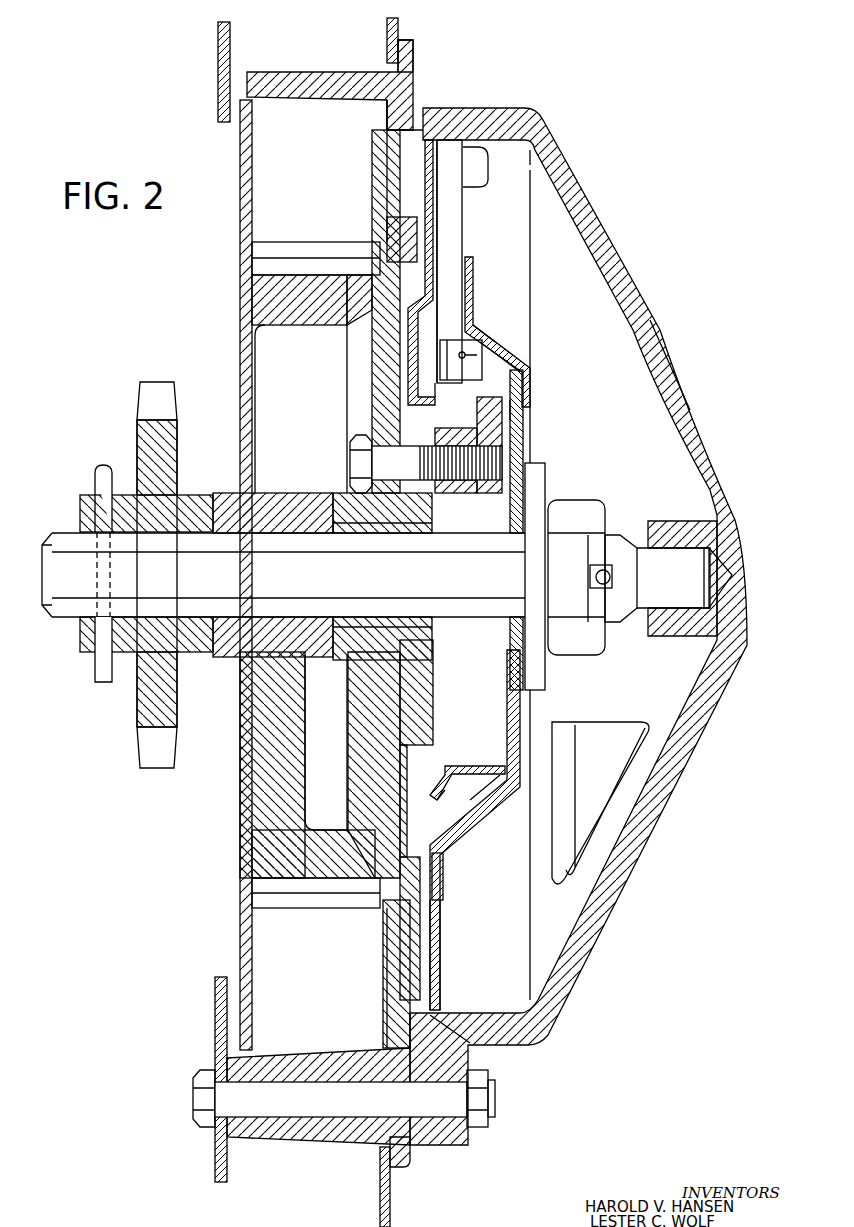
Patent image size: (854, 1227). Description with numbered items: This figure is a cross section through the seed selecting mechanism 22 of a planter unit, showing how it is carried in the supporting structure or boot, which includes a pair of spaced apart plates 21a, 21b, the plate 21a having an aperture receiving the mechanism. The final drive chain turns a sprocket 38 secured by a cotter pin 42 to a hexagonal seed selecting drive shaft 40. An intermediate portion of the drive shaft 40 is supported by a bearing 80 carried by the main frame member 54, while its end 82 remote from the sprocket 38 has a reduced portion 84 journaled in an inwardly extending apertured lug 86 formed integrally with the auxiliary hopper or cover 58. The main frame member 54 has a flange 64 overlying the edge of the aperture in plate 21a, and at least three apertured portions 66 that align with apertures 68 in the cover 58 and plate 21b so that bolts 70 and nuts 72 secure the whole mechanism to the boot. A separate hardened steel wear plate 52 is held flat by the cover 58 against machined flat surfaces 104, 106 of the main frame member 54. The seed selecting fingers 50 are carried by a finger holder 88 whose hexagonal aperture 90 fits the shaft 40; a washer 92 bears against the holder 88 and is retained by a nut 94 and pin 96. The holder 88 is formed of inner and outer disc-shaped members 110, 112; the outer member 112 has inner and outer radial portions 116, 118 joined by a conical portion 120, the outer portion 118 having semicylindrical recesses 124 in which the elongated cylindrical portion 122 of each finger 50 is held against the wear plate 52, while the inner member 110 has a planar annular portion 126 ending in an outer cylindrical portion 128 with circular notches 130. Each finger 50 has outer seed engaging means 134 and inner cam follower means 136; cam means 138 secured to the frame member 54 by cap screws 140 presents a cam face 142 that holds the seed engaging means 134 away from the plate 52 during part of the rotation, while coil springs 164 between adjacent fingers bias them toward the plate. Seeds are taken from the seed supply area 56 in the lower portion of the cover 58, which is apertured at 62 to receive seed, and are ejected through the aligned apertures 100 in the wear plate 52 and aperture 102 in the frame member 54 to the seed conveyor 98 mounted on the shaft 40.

The plate 21a is at (387, 30).
The plate 21b is at (230, 42).
The seed selecting mechanism 22 is at (600, 949).
The sprocket 38 is at (137, 705).
The seed selecting drive shaft 40 is at (57, 575).
The cotter pin 42 is at (99, 465).
The seed selecting fingers 50 is at (455, 136).
The wear plate 52 is at (440, 940).
The main frame member 54 is at (318, 75).
The seed supply area 56 is at (545, 745).
The auxiliary hopper 58 is at (700, 403).
The aperture 62 is at (626, 728).
The flange 64 is at (406, 55).
The apertured portions 66 is at (332, 1122).
The apertures 68 is at (470, 1075).
The bolts 70 is at (198, 1095).
The nuts 72 is at (480, 1127).
The bearing 80 is at (410, 535).
The end of drive shaft 82 is at (624, 546).
The reduced portion 84 is at (712, 572).
The apertured lug 86 is at (680, 637).
The seed selecting finger holder 88 is at (523, 410).
The hexagonal aperture 90 is at (510, 535).
The washer 92 is at (545, 495).
The nut 94 is at (586, 508).
The pin 96 is at (612, 578).
The seed conveyor 98 is at (243, 298).
The apertures 100 is at (428, 178).
The aperture 102 is at (400, 131).
The machined flat surface 104 is at (414, 85).
The machined flat surface 106 is at (348, 712).
The inner disc-shaped member 110 is at (470, 760).
The outer disc-shaped member 112 is at (497, 818).
The inner radial portion 116 is at (516, 702).
The outer radial portion 118 is at (443, 885).
The conical portion 120 is at (482, 815).
The elongated cylindrical portion 122 is at (455, 220).
The semicylindrical recesses 124 is at (474, 272).
The planar annular portion 126 is at (516, 428).
The outer cylindrical portion 128 is at (490, 362).
The circular notches 130 is at (452, 348).
The seed engaging means 134 is at (488, 182).
The cam follower means 136 is at (440, 392).
The cam means 138 is at (492, 412).
The cap screws 140 is at (358, 461).
The cam face 142 is at (500, 392).
The coil springs 164 is at (475, 332).